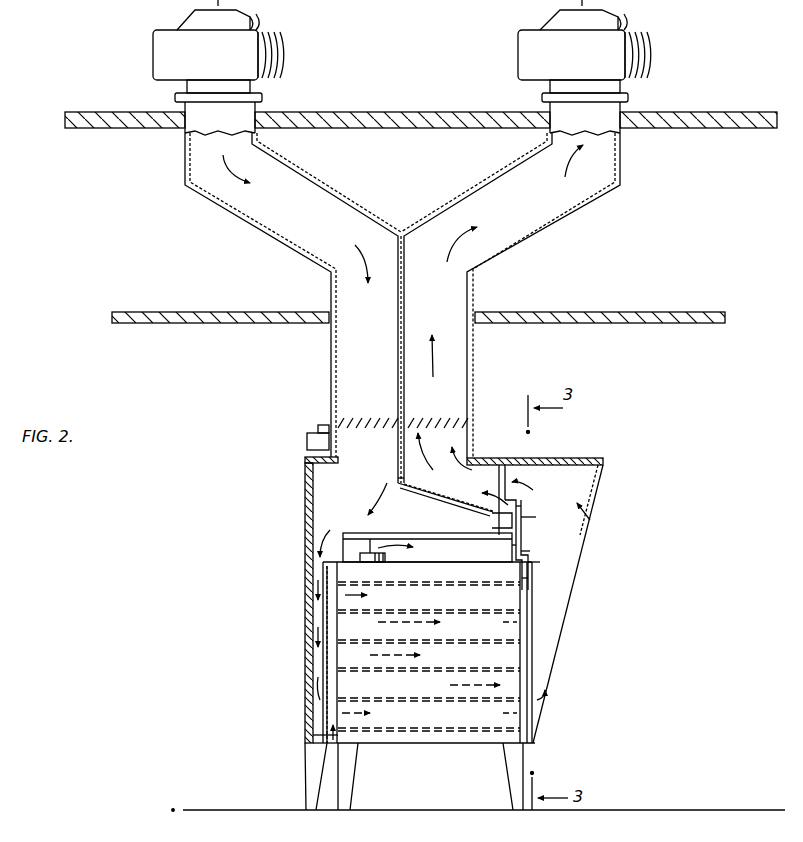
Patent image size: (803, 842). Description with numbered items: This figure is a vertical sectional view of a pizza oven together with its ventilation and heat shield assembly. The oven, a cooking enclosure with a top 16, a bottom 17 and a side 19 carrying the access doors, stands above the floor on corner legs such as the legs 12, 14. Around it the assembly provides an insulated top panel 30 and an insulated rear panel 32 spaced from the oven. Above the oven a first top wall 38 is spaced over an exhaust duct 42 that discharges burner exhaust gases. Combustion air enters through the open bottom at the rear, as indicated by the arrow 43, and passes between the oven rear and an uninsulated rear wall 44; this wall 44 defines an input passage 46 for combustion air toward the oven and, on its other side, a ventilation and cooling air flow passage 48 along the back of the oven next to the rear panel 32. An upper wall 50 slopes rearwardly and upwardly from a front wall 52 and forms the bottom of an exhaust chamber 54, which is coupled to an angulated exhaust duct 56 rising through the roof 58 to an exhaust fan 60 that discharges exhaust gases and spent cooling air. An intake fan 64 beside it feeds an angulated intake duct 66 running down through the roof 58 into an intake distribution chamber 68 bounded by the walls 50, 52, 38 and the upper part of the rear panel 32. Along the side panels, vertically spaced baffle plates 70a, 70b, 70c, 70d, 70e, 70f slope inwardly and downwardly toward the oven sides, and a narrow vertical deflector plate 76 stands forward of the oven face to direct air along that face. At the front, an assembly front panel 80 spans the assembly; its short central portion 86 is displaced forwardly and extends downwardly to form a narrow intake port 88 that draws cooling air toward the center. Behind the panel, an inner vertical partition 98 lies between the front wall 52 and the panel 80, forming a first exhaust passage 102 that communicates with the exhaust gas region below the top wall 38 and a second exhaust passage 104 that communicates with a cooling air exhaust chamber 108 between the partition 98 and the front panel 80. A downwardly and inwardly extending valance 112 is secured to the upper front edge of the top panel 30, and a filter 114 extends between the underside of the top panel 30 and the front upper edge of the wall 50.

The leg 12 is at (510, 777).
The leg 14 is at (350, 788).
The top 16 is at (428, 560).
The bottom 17 is at (410, 743).
The front side 19 is at (530, 657).
The top panel 30 is at (580, 462).
The rear panel 32 is at (305, 503).
The first top wall 38 is at (430, 532).
The exhaust duct 42 is at (373, 532).
The arrow 43 is at (325, 748).
The uninsulated rear wall 44 is at (324, 666).
The input passage 46 is at (333, 720).
The ventilation and cooling air flow passage 48 is at (318, 614).
The upper wall 50 is at (427, 497).
The front wall 52 is at (510, 514).
The exhaust chamber 54 is at (470, 491).
The angulated exhaust duct 56 is at (471, 295).
The roof 58 is at (697, 110).
The exhaust fan 60 is at (650, 52).
The intake fan 64 is at (284, 52).
The angulated intake duct 66 is at (318, 183).
The intake distribution chamber 68 is at (353, 448).
The baffle plate 70a is at (422, 585).
The baffle plate 70b is at (438, 611).
The baffle plate 70c is at (427, 643).
The baffle plate 70d is at (378, 673).
The baffle plate 70e is at (413, 702).
The baffle plate 70f is at (448, 733).
The deflector plate 76 is at (530, 630).
The assembly front panel 80 is at (537, 542).
The central portion 86 is at (540, 562).
The intake port 88 is at (528, 578).
The inner vertical partition 98 is at (517, 552).
The first exhaust passage 102 is at (519, 508).
The second exhaust passage 104 is at (536, 517).
The cooling air exhaust chamber 108 is at (530, 551).
The valance 112 is at (603, 482).
The filter 114 is at (505, 470).